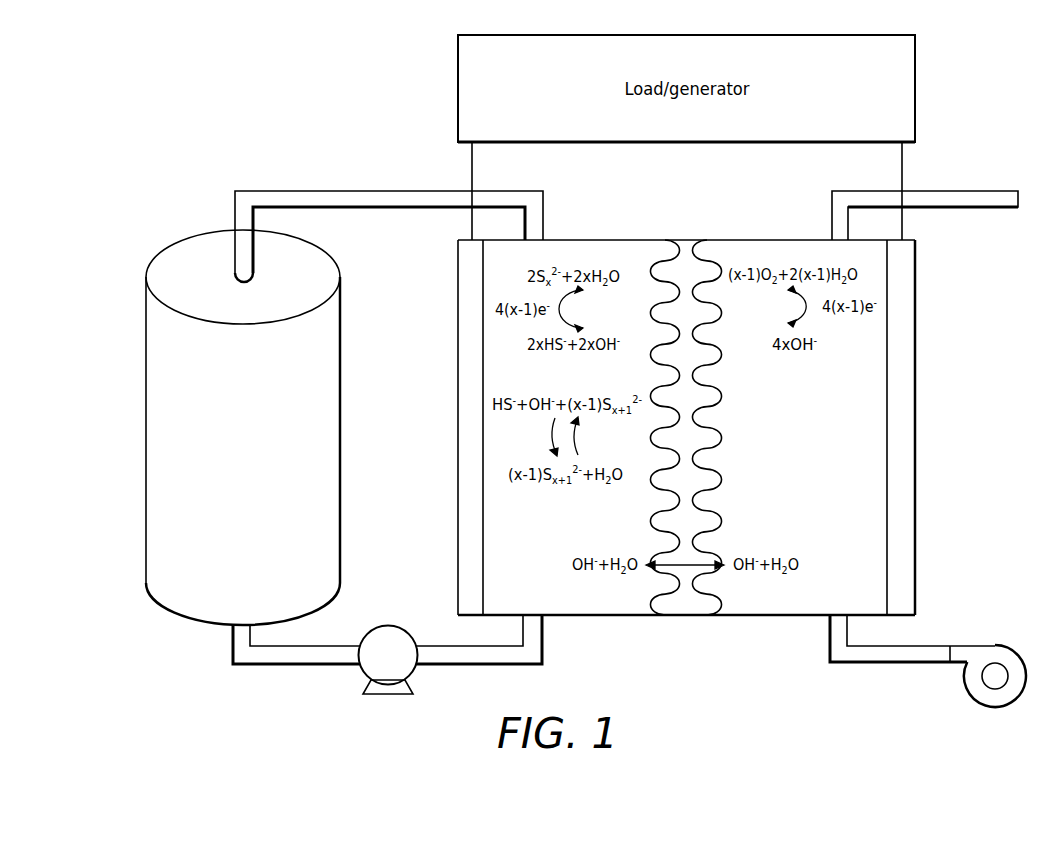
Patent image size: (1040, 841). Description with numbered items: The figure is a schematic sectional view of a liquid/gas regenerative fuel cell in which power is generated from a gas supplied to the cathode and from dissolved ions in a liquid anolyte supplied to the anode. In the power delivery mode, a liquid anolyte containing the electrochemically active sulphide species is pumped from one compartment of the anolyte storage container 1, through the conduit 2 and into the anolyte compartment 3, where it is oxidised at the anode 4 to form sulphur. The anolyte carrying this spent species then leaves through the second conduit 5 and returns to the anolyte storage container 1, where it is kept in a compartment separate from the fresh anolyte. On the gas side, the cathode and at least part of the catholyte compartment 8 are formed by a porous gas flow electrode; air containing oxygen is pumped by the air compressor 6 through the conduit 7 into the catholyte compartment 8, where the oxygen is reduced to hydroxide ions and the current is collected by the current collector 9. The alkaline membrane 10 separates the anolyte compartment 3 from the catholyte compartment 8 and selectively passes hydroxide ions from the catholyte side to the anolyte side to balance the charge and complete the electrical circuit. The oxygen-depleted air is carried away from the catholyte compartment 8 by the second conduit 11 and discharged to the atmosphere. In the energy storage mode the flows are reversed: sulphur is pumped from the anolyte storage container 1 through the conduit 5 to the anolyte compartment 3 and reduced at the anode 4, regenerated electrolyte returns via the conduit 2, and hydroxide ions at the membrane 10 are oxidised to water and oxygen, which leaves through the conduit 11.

The anolyte storage container 1 is at (146, 292).
The conduit 2 is at (297, 664).
The anolyte compartment 3 is at (500, 548).
The anode 4 is at (458, 600).
The second conduit 5 is at (362, 191).
The air compressor 6 is at (995, 707).
The conduit 7 is at (889, 662).
The catholyte compartment 8 is at (870, 550).
The current collector 9 is at (915, 600).
The alkaline membrane 10 is at (695, 562).
The second conduit 11 is at (995, 191).